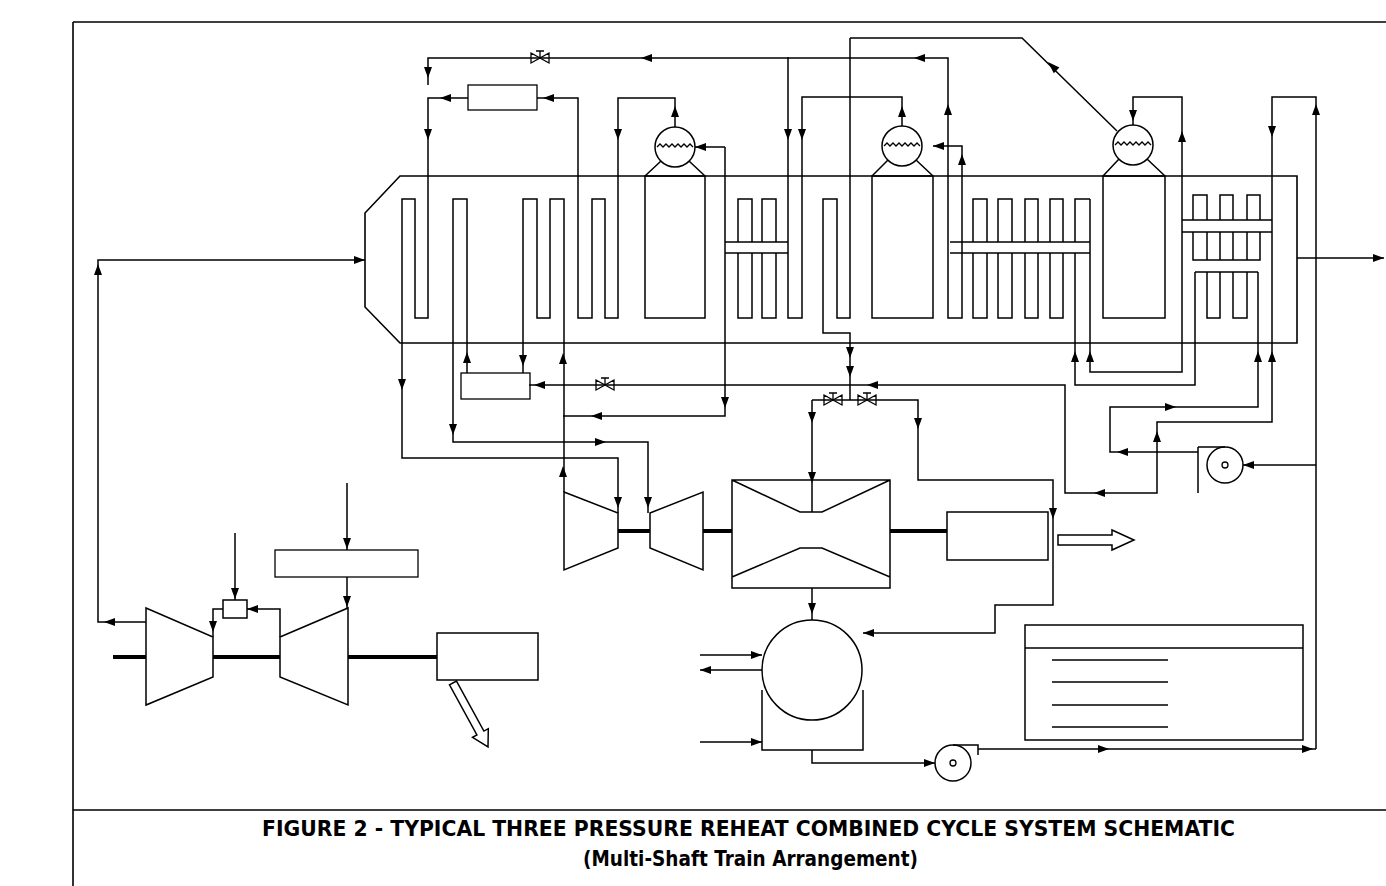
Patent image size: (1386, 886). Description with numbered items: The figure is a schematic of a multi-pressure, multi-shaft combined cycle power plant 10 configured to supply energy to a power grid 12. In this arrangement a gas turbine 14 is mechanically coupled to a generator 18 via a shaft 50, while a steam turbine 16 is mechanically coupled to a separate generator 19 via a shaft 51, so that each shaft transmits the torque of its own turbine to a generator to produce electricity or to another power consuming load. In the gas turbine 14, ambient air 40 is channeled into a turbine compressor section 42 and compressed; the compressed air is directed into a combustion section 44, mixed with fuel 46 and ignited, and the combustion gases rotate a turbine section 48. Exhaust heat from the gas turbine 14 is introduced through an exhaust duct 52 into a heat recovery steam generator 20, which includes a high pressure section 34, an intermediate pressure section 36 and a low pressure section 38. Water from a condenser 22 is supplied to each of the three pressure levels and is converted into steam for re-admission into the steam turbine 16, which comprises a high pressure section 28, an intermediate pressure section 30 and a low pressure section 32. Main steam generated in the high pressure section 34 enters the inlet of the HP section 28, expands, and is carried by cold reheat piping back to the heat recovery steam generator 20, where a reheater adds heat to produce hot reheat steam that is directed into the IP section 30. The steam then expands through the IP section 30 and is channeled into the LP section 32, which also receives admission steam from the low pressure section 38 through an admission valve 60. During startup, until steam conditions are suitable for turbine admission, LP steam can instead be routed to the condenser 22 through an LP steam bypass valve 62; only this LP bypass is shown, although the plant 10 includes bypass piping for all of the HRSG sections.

The power plant 10 is at (158, 115).
The power grid 12 is at (557, 752).
The gas turbine 14 is at (250, 661).
The steam turbine 16 is at (723, 551).
The generator 18 is at (538, 668).
The separate generator 19 is at (985, 560).
The heat recovery steam generator 20 is at (390, 155).
The condenser 22 is at (867, 710).
The high pressure section 28 is at (588, 558).
The intermediate pressure section 30 is at (685, 497).
The low pressure section 32 is at (850, 497).
The high pressure section 34 is at (675, 222).
The intermediate pressure section 36 is at (902, 222).
The low pressure section 38 is at (1134, 221).
The ambient air 40 is at (347, 460).
The turbine compressor section 42 is at (337, 705).
The combustion section 44 is at (227, 600).
The fuel 46 is at (233, 508).
The turbine section 48 is at (150, 705).
The shaft 50 is at (368, 658).
The shaft 51 is at (913, 538).
The exhaust duct 52 is at (207, 262).
The admission valve 60 is at (833, 404).
The LP steam bypass valve 62 is at (867, 404).